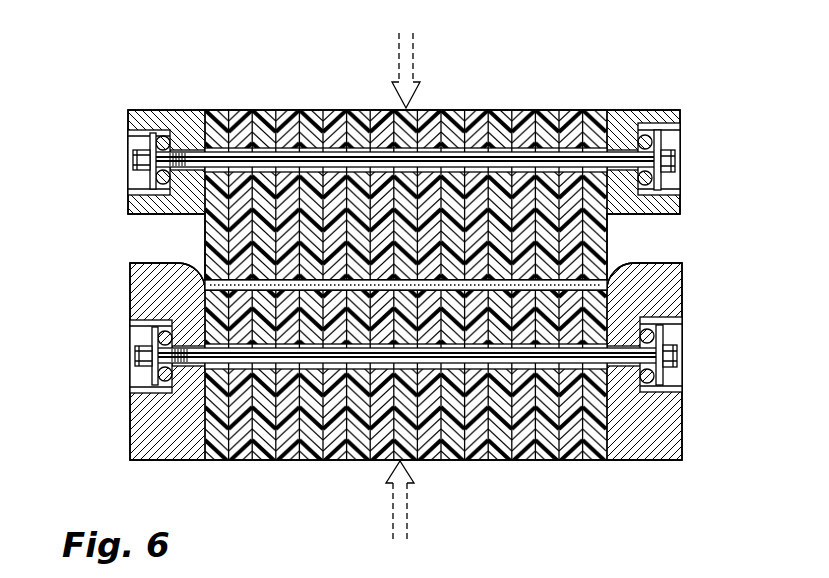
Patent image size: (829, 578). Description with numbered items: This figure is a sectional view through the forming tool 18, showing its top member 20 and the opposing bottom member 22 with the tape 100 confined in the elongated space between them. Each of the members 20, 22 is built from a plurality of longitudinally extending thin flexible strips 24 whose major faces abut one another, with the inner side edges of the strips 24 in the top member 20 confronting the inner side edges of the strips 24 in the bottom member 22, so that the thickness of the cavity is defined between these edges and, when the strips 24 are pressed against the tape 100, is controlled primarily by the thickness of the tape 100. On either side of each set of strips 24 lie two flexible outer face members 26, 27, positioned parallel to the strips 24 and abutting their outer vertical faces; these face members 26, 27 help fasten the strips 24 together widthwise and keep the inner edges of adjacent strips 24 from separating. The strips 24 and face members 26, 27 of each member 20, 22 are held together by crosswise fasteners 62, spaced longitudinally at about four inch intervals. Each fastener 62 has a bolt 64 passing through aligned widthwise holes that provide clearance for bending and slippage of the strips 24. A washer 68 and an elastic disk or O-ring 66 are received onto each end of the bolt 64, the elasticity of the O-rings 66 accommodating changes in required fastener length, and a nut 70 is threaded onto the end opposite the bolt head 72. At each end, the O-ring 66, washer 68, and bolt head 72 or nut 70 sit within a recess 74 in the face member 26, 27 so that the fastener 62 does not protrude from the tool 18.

The forming tool 18 is at (683, 103).
The top member 20 is at (80, 110).
The bottom member 22 is at (80, 270).
The thin flexible strips 24 is at (568, 110).
The outer face member 26 is at (178, 118).
The outer face member 27 is at (165, 462).
The crosswise fastener 62 is at (142, 182).
The bolt 64 is at (195, 155).
The elastic disk or O-ring 66 is at (160, 136).
The washer 68 is at (148, 138).
The nut 70 is at (134, 156).
The bolt head 72 is at (672, 161).
The recess 74 is at (664, 144).
The tape 100 is at (604, 285).